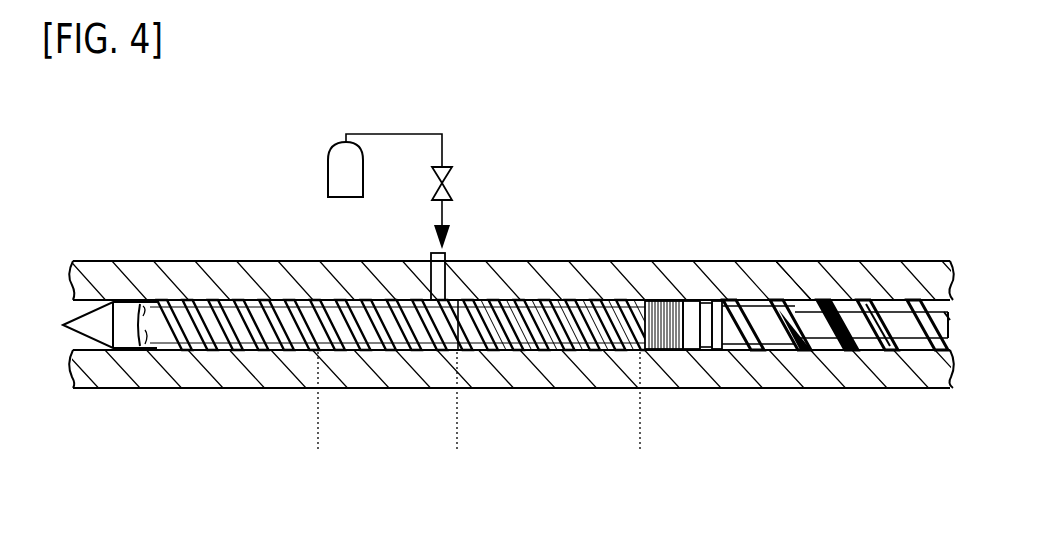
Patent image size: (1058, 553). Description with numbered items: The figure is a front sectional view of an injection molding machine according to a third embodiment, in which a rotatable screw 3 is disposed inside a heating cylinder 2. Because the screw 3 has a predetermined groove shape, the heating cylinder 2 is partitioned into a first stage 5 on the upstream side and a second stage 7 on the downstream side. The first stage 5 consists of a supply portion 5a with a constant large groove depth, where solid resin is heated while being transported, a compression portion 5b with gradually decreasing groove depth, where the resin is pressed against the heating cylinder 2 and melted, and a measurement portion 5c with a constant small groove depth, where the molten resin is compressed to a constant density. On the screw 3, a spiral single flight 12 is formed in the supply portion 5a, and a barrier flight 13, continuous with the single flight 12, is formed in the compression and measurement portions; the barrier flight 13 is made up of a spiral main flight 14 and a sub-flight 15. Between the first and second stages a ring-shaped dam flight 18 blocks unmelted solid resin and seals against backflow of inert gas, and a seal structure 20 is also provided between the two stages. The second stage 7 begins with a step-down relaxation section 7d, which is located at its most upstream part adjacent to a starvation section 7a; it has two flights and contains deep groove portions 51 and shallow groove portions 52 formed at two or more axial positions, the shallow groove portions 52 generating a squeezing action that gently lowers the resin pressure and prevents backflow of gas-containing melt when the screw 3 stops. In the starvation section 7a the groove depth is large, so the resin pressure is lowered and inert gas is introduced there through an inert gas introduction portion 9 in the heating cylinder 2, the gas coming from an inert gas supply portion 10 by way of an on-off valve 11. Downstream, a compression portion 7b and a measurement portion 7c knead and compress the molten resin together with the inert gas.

The heating cylinder 2 is at (197, 261).
The screw 3 is at (236, 300).
The first stage 5 is at (957, 450).
The supply portion 5a is at (958, 397).
The compression portion 5b is at (888, 397).
The measurement portion 5c is at (792, 397).
The second stage 7 is at (640, 455).
The starvation section 7a is at (455, 393).
The compression portion 7b is at (312, 395).
The measurement portion 7c is at (232, 395).
The step-down relaxation section 7d is at (640, 393).
The inert gas introduction portion 9 is at (420, 261).
The inert gas supply portion 10 is at (385, 165).
The on-off valve 11 is at (445, 170).
The single flight 12 is at (917, 300).
The barrier flight 13 is at (815, 252).
The main flight 14 is at (770, 300).
The sub-flight 15 is at (853, 300).
The dam flight 18 is at (714, 300).
The seal structure 20 is at (668, 300).
The deep groove portions 51 is at (504, 301).
The shallow groove portions 52 is at (460, 301).